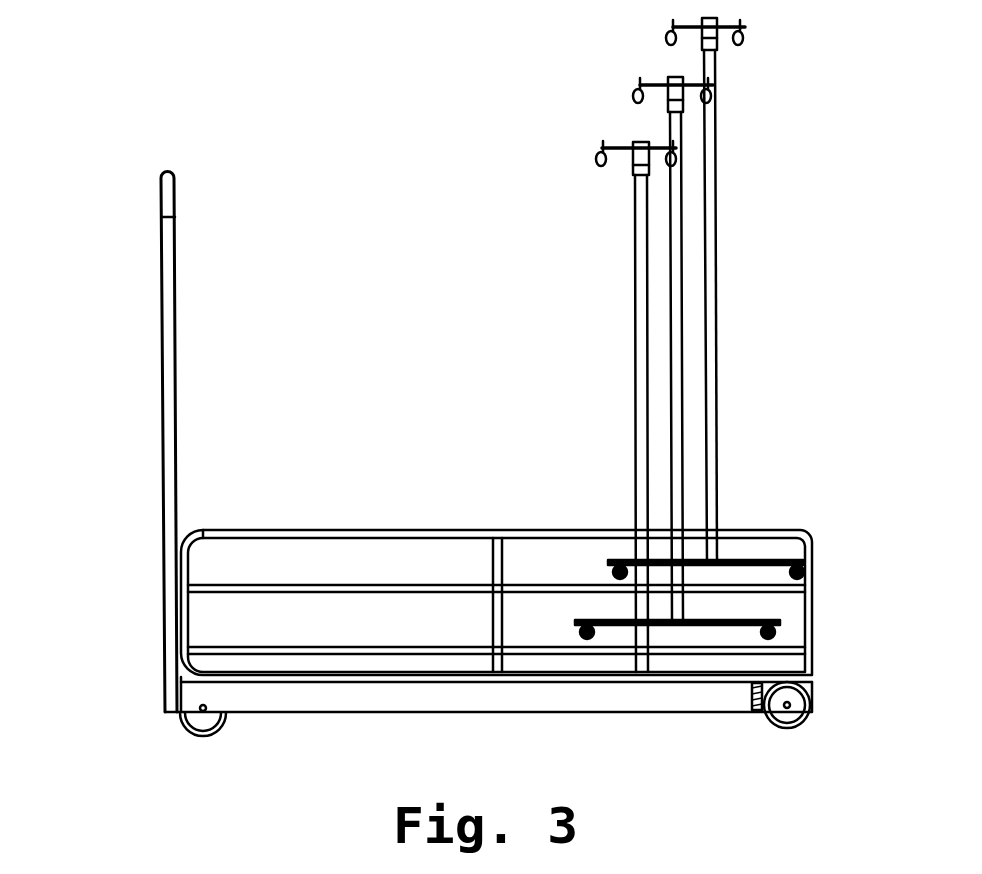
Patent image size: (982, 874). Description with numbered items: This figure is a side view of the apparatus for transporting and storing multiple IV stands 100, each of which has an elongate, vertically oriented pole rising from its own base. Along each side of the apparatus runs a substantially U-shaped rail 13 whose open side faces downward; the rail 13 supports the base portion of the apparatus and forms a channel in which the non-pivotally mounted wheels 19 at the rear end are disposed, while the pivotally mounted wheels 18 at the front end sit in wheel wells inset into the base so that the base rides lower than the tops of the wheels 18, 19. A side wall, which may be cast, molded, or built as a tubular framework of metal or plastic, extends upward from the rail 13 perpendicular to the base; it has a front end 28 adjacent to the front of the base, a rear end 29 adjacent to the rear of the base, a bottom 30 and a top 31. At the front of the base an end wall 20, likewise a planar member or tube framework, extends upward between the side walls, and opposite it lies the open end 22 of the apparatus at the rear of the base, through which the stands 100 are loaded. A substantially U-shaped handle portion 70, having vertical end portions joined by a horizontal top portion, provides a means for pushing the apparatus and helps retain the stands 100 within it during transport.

The substantially U-shaped rail 13 is at (390, 695).
The pivotally mounted wheels 18 is at (787, 729).
The non-pivotally mounted wheels 19 is at (203, 736).
The end wall 20 is at (812, 585).
The open end 22 is at (140, 573).
The front end of side wall 28 is at (808, 638).
The rear end of side wall 29 is at (183, 639).
The bottom of side wall 30 is at (567, 676).
The top of side wall 31 is at (519, 530).
The handle portion 70 is at (178, 252).
The IV stand 100 is at (668, 128).